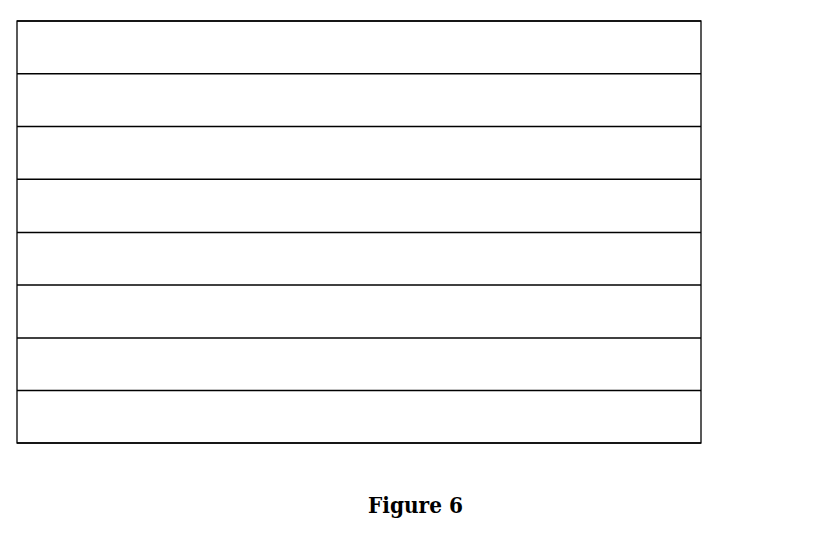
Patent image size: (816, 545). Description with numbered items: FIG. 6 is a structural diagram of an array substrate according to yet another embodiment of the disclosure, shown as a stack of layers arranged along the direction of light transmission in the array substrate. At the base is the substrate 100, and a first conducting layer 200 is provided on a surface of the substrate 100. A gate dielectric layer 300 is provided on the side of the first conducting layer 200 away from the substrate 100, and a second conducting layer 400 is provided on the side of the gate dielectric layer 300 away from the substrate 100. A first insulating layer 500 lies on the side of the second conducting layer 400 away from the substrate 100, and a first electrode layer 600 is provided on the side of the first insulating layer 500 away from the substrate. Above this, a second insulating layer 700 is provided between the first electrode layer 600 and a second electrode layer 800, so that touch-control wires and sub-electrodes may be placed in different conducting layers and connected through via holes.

The second electrode layer 800 is at (677, 56).
The second insulating layer 700 is at (677, 108).
The first electrode layer 600 is at (677, 157).
The first insulating layer 500 is at (674, 215).
The second conducting layer 400 is at (667, 276).
The gate dielectric layer 300 is at (669, 320).
The first conducting layer 200 is at (670, 373).
The substrate 100 is at (674, 420).